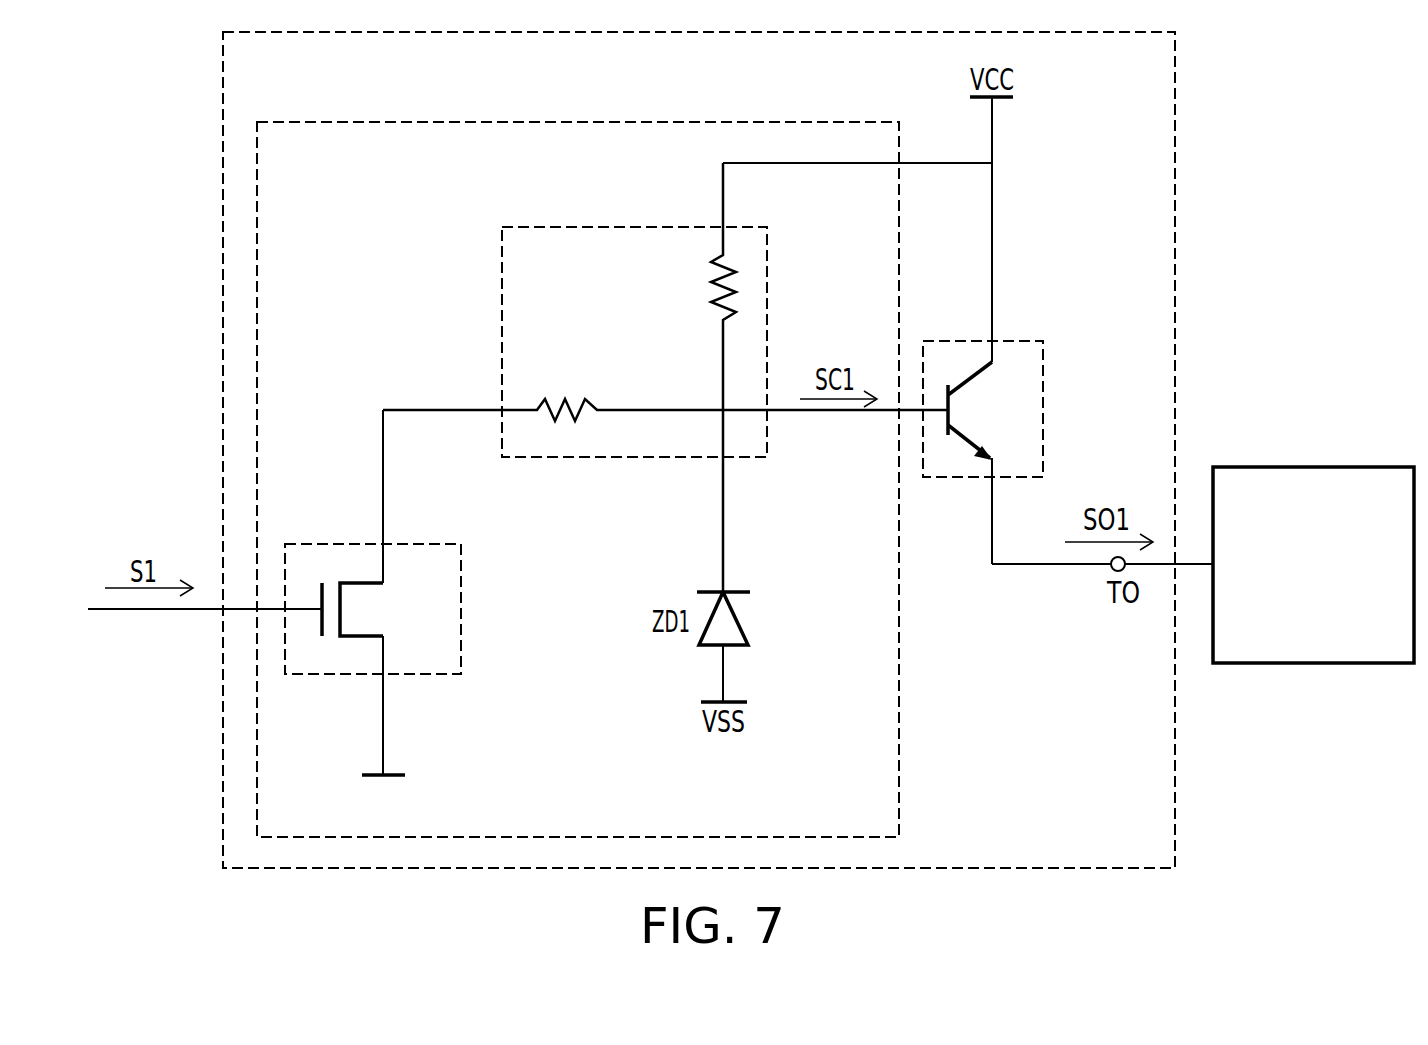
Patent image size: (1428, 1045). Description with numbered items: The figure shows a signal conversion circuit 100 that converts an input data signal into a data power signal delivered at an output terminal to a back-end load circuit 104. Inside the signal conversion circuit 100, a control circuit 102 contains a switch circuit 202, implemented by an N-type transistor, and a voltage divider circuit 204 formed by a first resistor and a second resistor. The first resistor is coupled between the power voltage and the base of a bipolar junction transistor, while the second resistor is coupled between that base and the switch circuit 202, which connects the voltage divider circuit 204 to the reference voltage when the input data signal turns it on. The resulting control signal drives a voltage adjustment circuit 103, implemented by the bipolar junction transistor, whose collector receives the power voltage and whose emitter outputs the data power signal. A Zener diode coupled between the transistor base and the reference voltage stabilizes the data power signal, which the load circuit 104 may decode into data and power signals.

The signal conversion circuit 100 is at (223, 75).
The control circuit 102 is at (410, 121).
The voltage adjustment circuit 103 is at (1043, 392).
The load circuit 104 is at (1313, 467).
The switch circuit 202 is at (461, 625).
The voltage divider circuit 204 is at (502, 276).